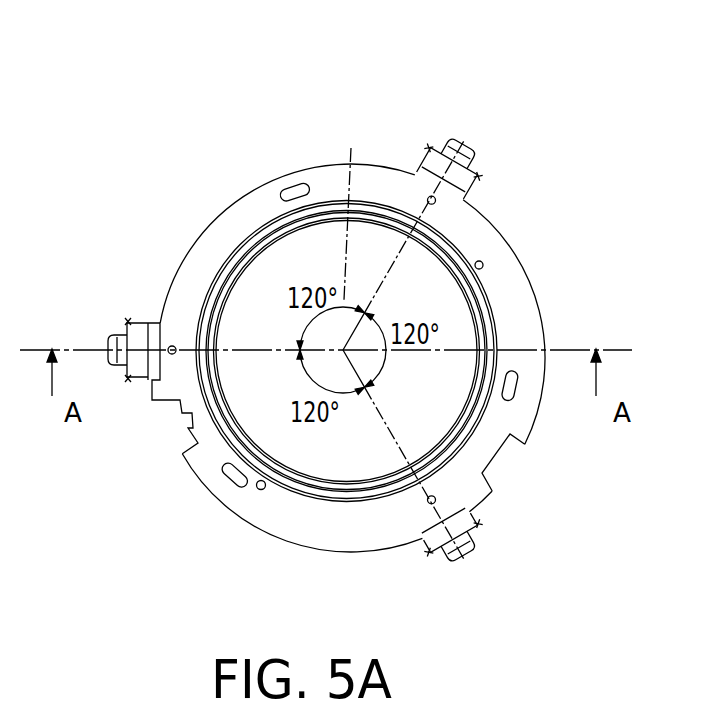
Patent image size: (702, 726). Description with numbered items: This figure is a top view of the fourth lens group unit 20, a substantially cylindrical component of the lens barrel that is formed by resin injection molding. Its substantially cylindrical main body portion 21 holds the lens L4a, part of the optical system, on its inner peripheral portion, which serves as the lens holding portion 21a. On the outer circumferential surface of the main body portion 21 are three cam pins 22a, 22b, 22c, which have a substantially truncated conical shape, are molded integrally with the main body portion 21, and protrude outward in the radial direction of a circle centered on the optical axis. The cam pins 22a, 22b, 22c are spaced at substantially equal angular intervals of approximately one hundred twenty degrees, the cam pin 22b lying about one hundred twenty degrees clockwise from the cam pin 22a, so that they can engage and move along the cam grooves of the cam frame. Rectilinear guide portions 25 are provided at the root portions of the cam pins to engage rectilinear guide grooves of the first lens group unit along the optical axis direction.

The fourth lens group unit 20 is at (328, 355).
The main body portion 21 is at (527, 305).
The lens holding portion 21a is at (455, 258).
The cam pin 22a is at (108, 338).
The cam pin 22b is at (462, 142).
The cam pin 22c is at (466, 556).
The rectilinear guide portion 25 is at (128, 320).
The lens L4a is at (346, 208).